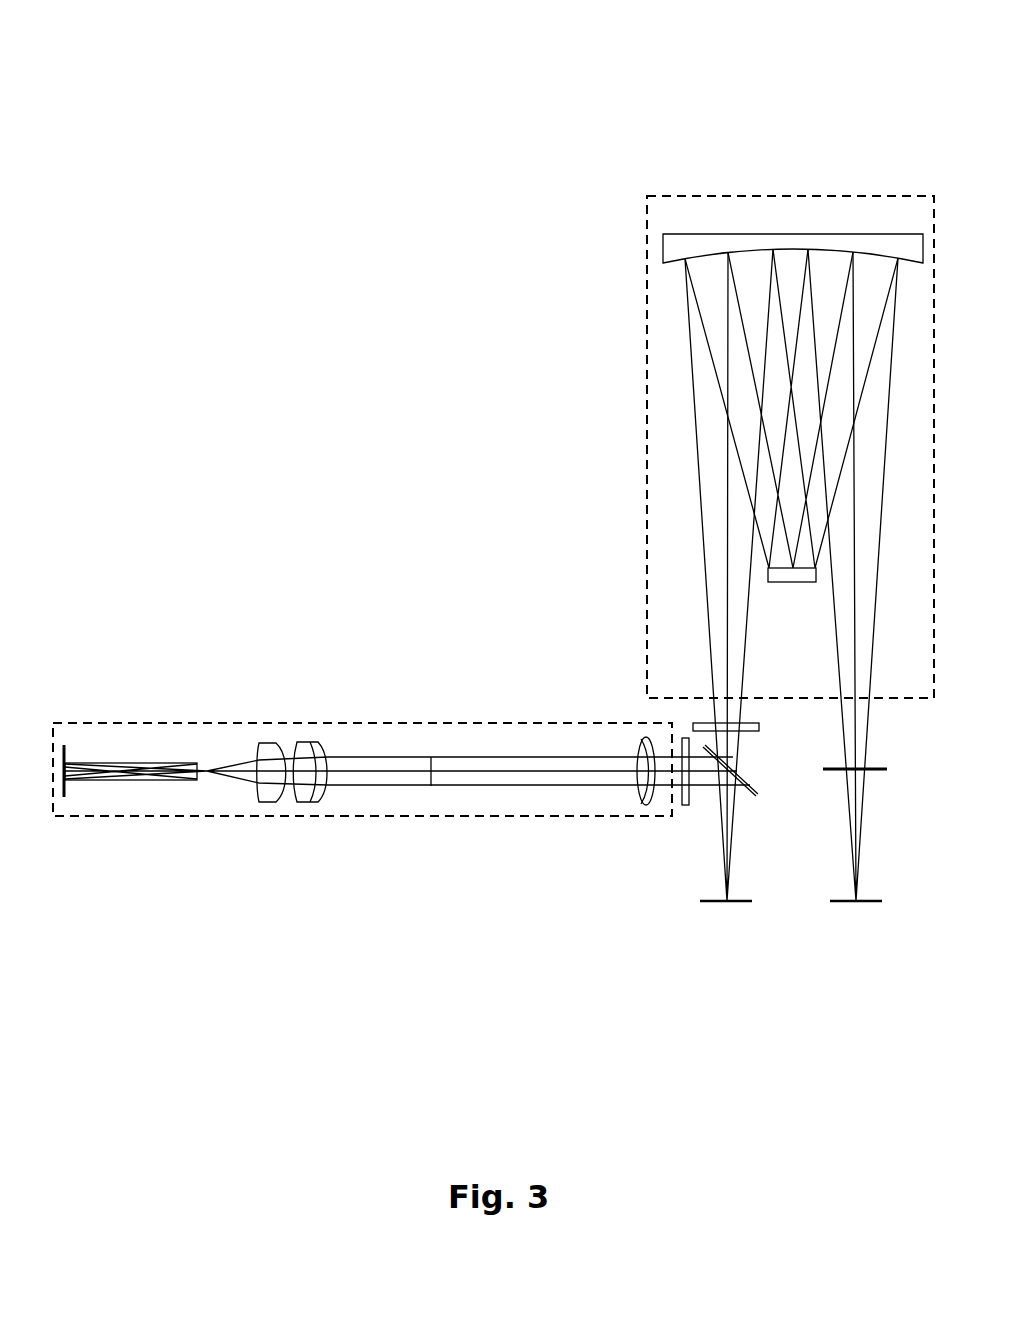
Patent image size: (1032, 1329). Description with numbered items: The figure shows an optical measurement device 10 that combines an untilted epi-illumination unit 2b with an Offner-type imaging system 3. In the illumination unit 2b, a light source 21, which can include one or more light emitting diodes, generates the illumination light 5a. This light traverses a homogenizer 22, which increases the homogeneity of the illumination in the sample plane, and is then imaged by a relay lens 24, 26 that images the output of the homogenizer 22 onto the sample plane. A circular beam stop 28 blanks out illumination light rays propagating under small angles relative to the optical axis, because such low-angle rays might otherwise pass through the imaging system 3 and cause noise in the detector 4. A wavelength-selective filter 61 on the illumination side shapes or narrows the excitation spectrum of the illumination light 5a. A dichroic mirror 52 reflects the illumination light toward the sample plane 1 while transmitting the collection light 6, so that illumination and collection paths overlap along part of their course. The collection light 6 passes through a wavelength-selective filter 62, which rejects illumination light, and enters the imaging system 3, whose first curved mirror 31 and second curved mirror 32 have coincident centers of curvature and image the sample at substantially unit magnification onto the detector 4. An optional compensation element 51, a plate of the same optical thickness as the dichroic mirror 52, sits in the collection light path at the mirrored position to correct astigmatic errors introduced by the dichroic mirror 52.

The optical measurement system 10 is at (208, 101).
The imaging system 3 is at (921, 218).
The first curved mirror 31 is at (686, 252).
The second curved mirror 32 is at (785, 573).
The collection light 6 is at (687, 425).
The illumination unit 2b is at (212, 740).
The light source 21 is at (62, 740).
The homogenizer 22 is at (110, 782).
The relay lens 24 is at (266, 802).
The circular beam stop 28 is at (429, 746).
The relay lens 26 is at (632, 745).
The wavelength-selective filter 61 is at (686, 742).
The wavelength-selective filter 62 is at (754, 733).
The dichroic mirror 52 is at (755, 800).
The compensation element 51 is at (880, 775).
The illumination light 5a is at (496, 794).
The object plane 1 is at (718, 910).
The detector 4 is at (854, 910).